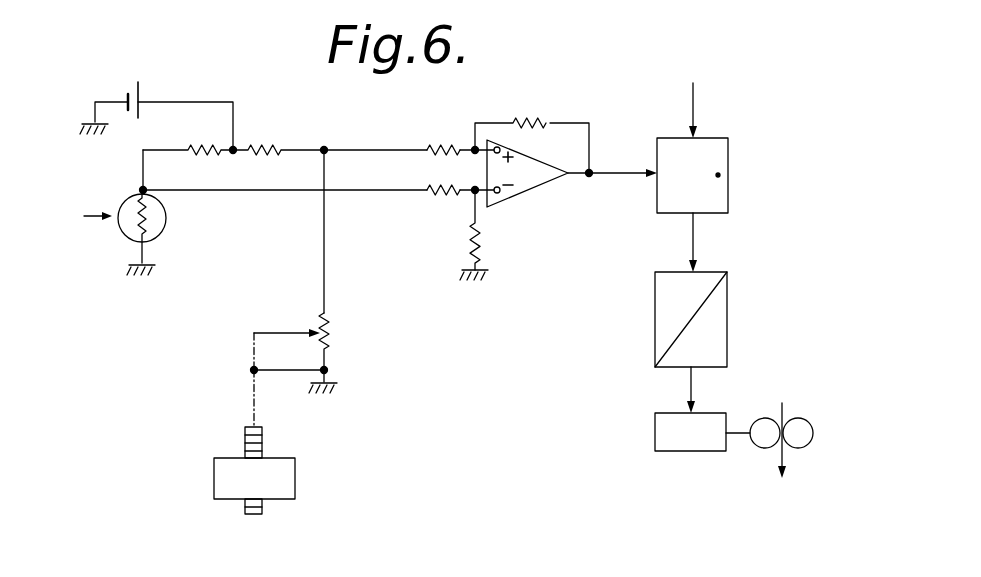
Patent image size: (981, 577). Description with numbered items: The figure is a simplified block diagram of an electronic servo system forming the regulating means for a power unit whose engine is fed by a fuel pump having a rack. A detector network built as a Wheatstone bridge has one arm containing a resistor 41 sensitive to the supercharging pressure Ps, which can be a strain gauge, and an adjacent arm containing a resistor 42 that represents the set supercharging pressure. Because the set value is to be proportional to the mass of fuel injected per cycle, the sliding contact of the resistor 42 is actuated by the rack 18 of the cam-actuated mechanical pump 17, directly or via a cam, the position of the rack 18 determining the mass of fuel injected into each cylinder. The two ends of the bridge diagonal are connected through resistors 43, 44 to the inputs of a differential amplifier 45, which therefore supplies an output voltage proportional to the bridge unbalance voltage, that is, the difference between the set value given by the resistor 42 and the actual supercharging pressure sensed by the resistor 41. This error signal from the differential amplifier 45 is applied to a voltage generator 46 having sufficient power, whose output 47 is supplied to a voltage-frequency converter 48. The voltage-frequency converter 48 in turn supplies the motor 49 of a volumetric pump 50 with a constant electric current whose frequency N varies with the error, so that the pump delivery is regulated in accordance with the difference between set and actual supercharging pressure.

The mechanical pump 17 is at (224, 449).
The rack 18 is at (258, 445).
The resistor 41 is at (125, 237).
The resistor 42 is at (326, 339).
The resistor 43 is at (440, 147).
The resistor 44 is at (443, 195).
The differential amplifier 45 is at (535, 184).
The voltage generator 46 is at (730, 185).
The output 47 is at (693, 225).
The voltage-frequency converter 48 is at (661, 326).
The motor 49 is at (697, 440).
The volumetric pump 50 is at (790, 418).